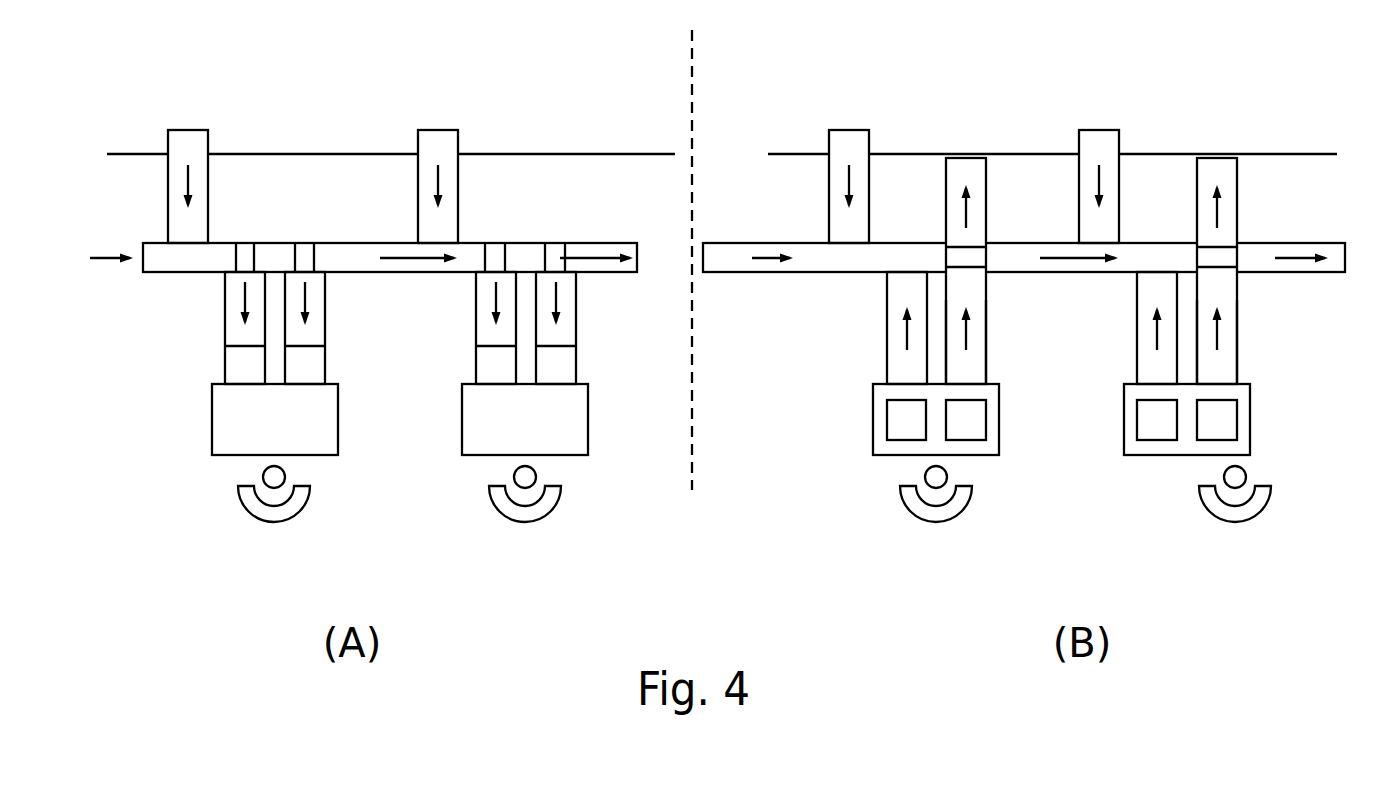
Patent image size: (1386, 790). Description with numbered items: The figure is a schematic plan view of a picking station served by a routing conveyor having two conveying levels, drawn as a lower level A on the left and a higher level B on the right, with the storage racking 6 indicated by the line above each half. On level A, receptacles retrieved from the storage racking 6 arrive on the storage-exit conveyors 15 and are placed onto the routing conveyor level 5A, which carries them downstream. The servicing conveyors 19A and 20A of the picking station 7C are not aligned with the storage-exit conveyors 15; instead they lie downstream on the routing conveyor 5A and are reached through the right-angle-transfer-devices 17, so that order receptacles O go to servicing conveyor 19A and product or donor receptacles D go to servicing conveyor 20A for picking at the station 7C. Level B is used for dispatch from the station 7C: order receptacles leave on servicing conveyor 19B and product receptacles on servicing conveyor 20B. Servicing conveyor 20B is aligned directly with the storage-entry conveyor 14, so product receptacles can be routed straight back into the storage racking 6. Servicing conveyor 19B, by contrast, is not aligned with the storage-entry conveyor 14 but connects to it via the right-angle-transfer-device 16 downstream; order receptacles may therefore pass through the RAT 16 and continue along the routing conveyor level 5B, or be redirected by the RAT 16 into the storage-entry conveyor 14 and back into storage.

The storage racking 6 is at (325, 58).
The routing conveyor level A 5A is at (158, 263).
The routing conveyor level B 5B is at (1337, 255).
The storage-entry conveyor 14 is at (966, 170).
The storage-exit conveyor 15 is at (189, 143).
The right-angle-transfer-device 16 is at (968, 258).
The right-angle-transfer-device 17 is at (245, 258).
The servicing conveyor 19A is at (245, 332).
The servicing conveyor 20A is at (305, 332).
The servicing conveyor 19B is at (905, 363).
The servicing conveyor 20B is at (968, 363).
The picking station 7C is at (345, 480).